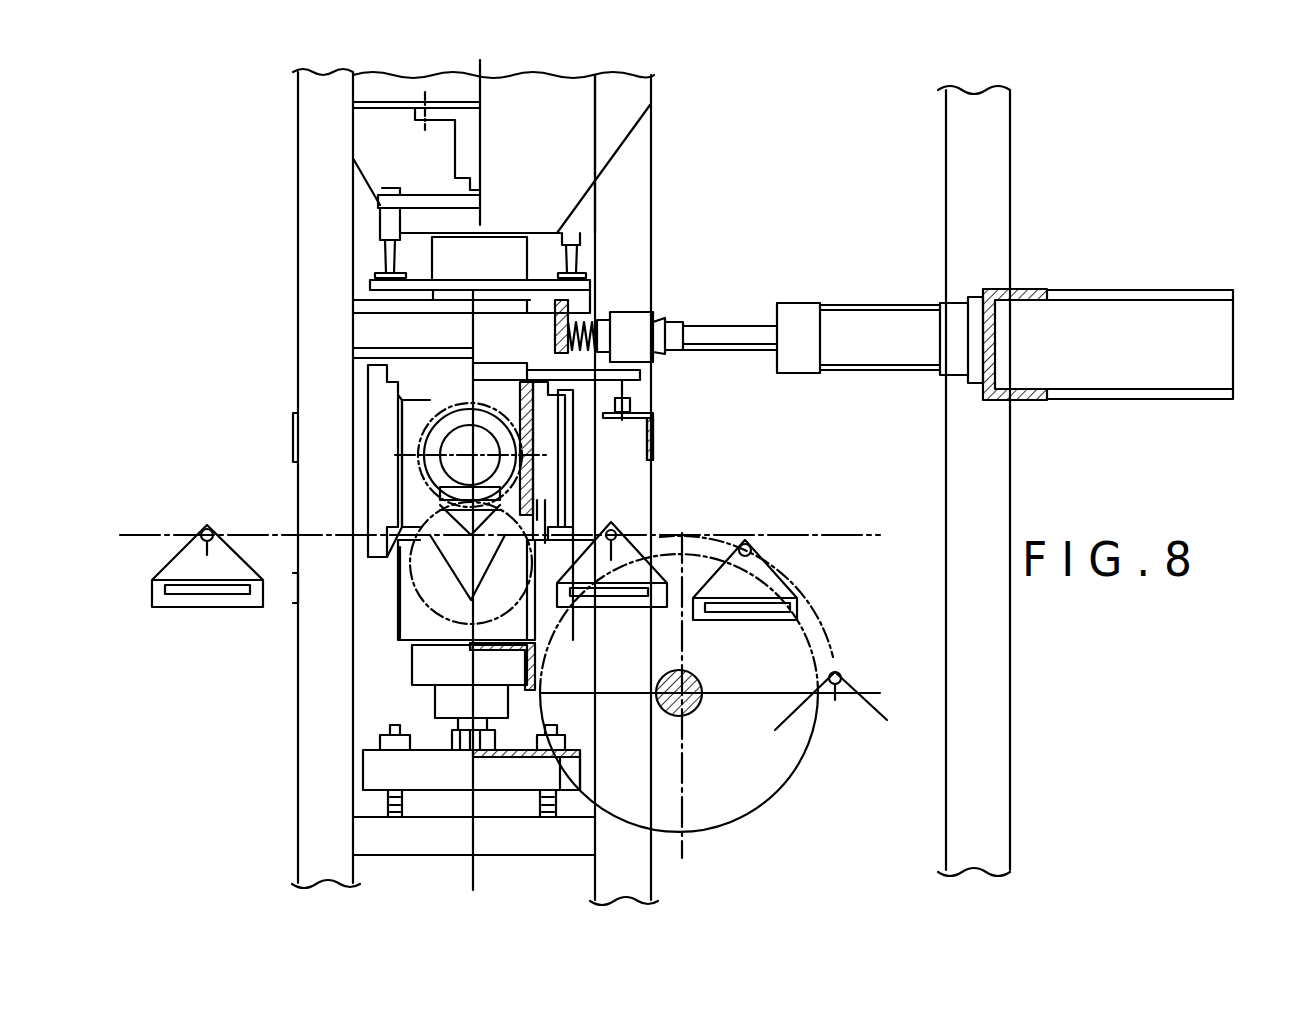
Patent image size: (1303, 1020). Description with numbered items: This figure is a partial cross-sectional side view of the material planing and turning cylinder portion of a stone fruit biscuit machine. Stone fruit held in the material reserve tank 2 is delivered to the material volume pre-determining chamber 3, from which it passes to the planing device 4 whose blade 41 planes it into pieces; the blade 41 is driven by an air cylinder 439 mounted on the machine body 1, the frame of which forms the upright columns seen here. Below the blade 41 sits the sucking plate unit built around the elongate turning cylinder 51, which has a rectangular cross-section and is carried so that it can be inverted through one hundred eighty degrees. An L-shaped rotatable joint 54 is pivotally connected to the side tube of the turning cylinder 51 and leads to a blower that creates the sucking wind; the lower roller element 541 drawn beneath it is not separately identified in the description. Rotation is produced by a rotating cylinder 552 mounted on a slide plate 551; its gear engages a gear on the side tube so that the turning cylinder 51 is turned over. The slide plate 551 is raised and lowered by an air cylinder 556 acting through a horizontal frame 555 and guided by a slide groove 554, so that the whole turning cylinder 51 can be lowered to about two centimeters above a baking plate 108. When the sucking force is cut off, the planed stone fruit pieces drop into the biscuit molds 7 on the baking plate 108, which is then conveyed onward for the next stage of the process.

The machine body 1 is at (632, 207).
The material reserve tank 2 is at (387, 352).
The material volume pre-determining chamber 3 is at (590, 125).
The planing device 4 is at (365, 303).
The biscuit molds 7 is at (765, 597).
The blade 41 is at (402, 317).
The elongate turning cylinder 51 is at (527, 490).
The rotatable joint 54 is at (428, 487).
The baking plates 108 is at (203, 583).
The air cylinder 439 is at (728, 332).
The lower roller 541 is at (453, 567).
The slide plate 551 is at (420, 407).
The rotating cylinder 552 is at (418, 617).
The slide groove 554 is at (387, 442).
The horizontal frame 555 is at (430, 662).
The air cylinder 556 is at (450, 700).